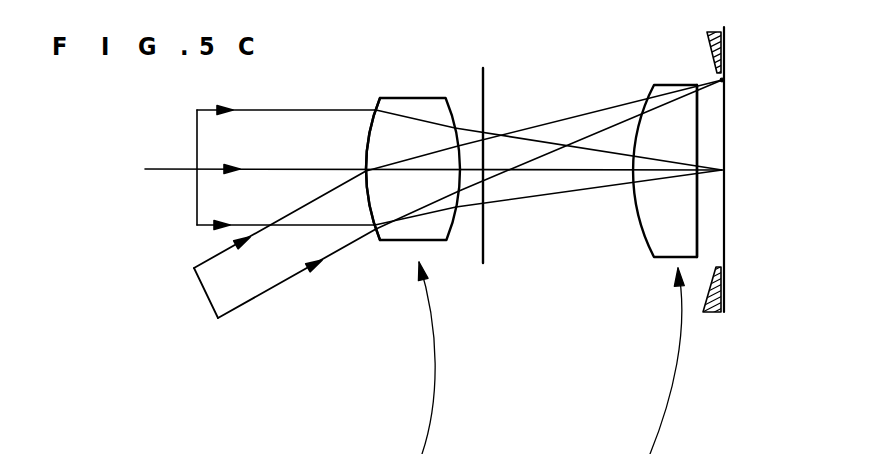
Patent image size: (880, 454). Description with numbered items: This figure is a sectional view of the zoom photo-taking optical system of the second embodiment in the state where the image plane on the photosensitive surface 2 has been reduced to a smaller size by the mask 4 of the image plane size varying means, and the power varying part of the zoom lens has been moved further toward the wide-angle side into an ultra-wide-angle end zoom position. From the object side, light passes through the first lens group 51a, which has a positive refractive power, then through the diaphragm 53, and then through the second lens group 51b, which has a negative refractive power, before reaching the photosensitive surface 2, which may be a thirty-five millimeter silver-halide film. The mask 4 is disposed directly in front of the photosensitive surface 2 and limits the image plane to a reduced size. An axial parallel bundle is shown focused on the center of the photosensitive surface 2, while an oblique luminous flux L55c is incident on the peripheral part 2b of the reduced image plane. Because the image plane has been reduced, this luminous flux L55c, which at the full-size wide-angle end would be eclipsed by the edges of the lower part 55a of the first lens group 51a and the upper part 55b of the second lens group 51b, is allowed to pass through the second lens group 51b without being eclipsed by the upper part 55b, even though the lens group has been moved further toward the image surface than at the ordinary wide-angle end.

The first lens group 51a is at (395, 97).
The lower part of the first lens group 55a is at (375, 237).
The diaphragm 53 is at (482, 86).
The second lens group 51b is at (672, 84).
The upper part of the second lens group 55b is at (697, 84).
The photosensitive surface 2 is at (726, 143).
The peripheral part of the image plane 2b is at (724, 82).
The mask 4 is at (722, 43).
The luminous flux L55c is at (258, 297).